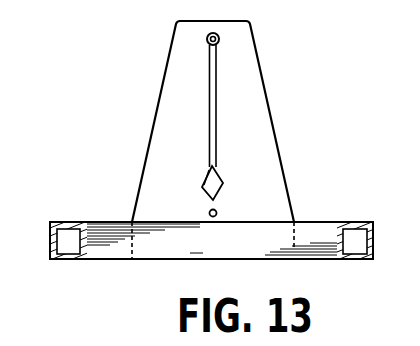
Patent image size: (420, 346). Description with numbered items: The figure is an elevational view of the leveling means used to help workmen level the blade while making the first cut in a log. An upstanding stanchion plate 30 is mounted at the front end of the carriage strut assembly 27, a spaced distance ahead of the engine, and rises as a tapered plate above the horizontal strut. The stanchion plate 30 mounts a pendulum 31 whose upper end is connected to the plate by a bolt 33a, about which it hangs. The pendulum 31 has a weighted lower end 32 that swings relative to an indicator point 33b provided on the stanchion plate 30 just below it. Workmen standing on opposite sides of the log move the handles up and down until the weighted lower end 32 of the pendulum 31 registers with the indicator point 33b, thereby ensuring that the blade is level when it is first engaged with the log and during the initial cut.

The carriage strut assembly 27 is at (343, 258).
The stanchion plate 30 is at (263, 175).
The pendulum 31 is at (216, 113).
The weighted lower end 32 is at (206, 195).
The bolt 33a is at (219, 38).
The indicator point 33b is at (209, 213).